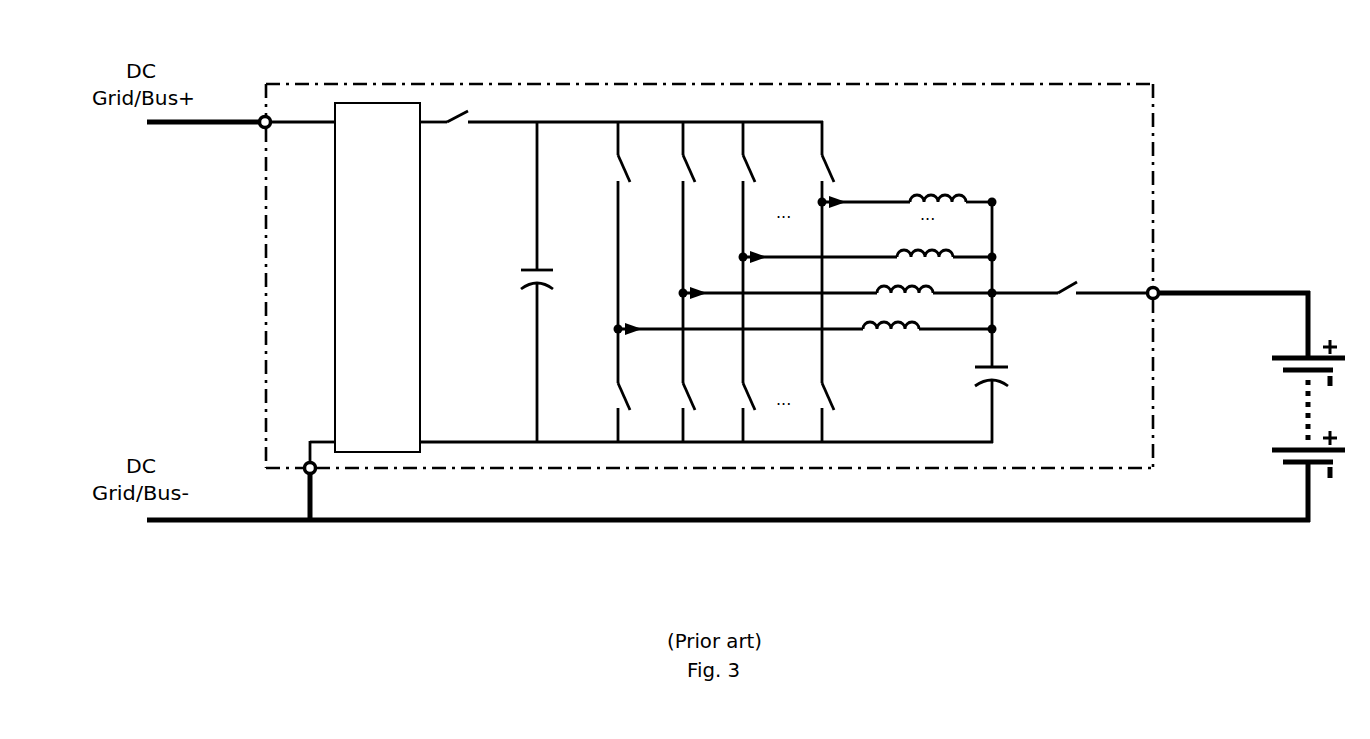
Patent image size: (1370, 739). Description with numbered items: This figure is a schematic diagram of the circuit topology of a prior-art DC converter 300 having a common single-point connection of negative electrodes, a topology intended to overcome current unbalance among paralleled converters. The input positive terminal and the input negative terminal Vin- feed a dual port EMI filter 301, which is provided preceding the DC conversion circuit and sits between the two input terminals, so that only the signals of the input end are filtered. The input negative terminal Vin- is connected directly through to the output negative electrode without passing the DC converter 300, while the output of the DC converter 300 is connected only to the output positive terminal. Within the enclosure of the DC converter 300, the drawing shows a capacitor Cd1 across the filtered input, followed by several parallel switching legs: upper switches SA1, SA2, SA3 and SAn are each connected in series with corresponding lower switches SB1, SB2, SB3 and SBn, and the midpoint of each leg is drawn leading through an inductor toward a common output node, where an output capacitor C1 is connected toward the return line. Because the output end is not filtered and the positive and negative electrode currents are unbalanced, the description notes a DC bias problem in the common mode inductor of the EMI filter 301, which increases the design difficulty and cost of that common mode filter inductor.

The DC converter 300 is at (766, 276).
The EMI filter 301 is at (377, 277).
The input DC-link capacitor Cd1 is at (520, 282).
The output capacitor C1 is at (971, 386).
The upper switch of phase 1 SA1 is at (607, 225).
The upper switch of phase 2 SA2 is at (671, 207).
The upper switch of phase 3 SA3 is at (732, 189).
The upper switch of phase n SAn is at (810, 161).
The lower switch of phase 1 SB1 is at (607, 385).
The lower switch of phase 2 SB2 is at (671, 367).
The lower switch of phase 3 SB3 is at (732, 349).
The lower switch of phase n SBn is at (810, 322).
The input negative terminal Vin- is at (280, 484).